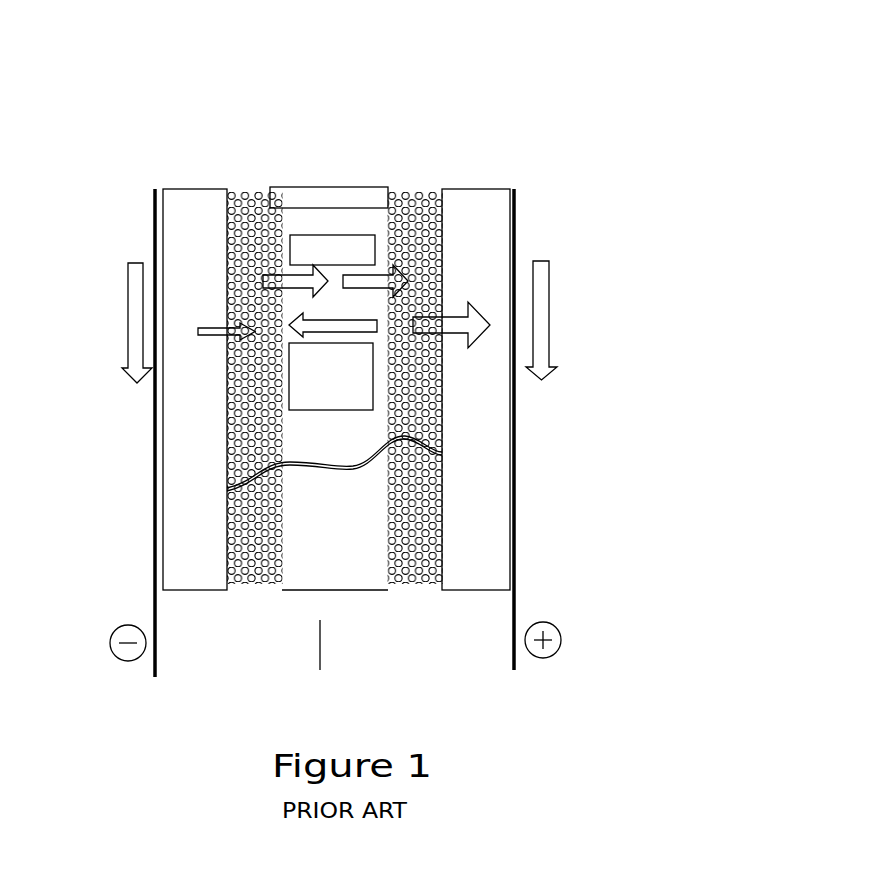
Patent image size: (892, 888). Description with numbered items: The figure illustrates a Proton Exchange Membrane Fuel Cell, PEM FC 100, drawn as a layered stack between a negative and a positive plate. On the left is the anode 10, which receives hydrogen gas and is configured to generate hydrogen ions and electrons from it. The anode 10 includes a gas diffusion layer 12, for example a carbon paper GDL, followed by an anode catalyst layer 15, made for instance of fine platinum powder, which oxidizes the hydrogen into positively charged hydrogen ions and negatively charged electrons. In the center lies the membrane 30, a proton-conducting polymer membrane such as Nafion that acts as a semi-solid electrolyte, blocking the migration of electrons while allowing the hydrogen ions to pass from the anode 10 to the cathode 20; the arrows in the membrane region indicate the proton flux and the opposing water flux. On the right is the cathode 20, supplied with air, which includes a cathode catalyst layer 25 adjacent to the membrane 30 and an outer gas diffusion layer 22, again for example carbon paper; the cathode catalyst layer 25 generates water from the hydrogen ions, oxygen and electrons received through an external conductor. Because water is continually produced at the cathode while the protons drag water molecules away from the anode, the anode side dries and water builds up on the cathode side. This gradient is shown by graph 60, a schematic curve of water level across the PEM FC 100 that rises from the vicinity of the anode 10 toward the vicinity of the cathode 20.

The anode 10 is at (120, 76).
The gas diffusion layer 12 is at (162, 188).
The anode catalyst layer 15 is at (238, 200).
The cathode 20 is at (543, 73).
The gas diffusion layer 22 is at (498, 186).
The cathode catalyst layer 25 is at (430, 207).
The membrane 30 is at (340, 234).
The graph 60 is at (355, 464).
The proton exchange membrane fuel cell 100 is at (630, 284).